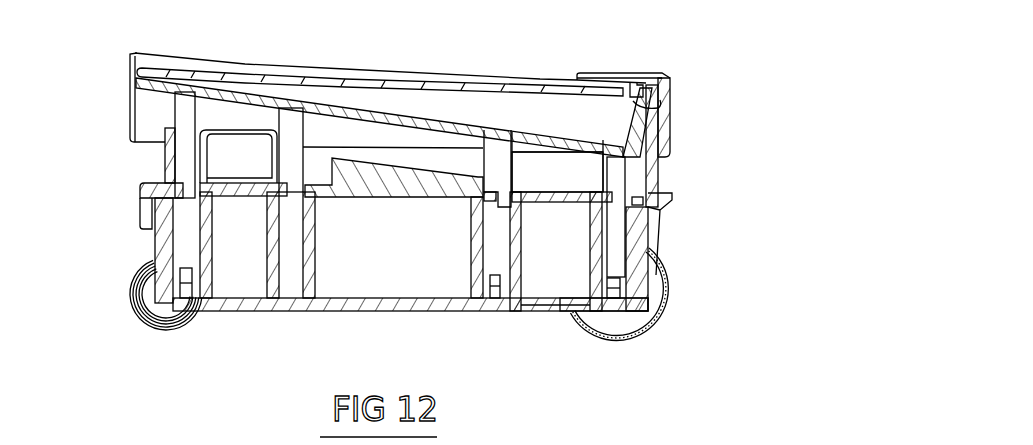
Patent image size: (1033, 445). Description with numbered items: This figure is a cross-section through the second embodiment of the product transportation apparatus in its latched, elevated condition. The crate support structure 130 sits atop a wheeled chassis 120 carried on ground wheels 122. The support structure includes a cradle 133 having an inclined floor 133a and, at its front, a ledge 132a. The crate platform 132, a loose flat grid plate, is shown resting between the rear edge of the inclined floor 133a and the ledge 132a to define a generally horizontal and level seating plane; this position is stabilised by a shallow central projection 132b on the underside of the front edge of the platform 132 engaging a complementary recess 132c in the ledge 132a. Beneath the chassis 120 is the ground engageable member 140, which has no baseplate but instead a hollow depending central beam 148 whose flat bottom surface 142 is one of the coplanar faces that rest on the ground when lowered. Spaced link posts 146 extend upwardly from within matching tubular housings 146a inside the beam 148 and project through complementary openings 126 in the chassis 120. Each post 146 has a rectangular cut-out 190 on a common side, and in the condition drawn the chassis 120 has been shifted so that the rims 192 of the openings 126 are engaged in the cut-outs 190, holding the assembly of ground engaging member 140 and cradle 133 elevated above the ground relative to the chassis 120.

The wheeled chassis 120 is at (671, 222).
The ground wheels 122 is at (173, 330).
The openings 126 is at (310, 193).
The crate support structure 130 is at (130, 62).
The crate platform 132 is at (548, 84).
The ledge 132a is at (671, 78).
The central projection 132b is at (634, 92).
The recess 132c is at (658, 117).
The cradle 133 is at (130, 107).
The inclined floor 133a is at (447, 117).
The ground engageable member 140 is at (484, 325).
The flat coplanar surfaces 142 is at (533, 312).
The link posts 146 is at (280, 233).
The tubular housings 146a is at (477, 237).
The central beam 148 is at (393, 308).
The rectangular cut-out 190 is at (177, 195).
The rims 192 is at (268, 182).